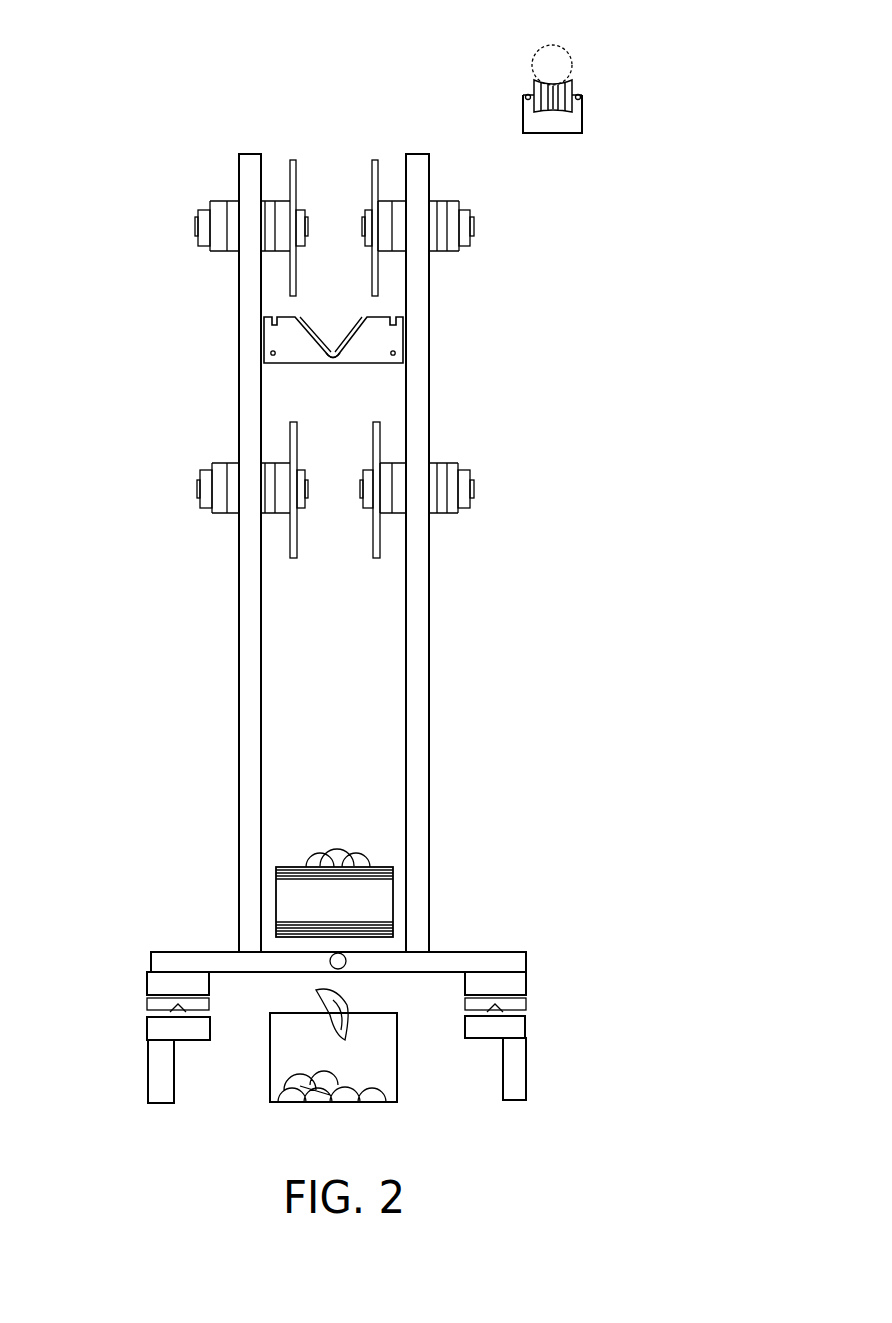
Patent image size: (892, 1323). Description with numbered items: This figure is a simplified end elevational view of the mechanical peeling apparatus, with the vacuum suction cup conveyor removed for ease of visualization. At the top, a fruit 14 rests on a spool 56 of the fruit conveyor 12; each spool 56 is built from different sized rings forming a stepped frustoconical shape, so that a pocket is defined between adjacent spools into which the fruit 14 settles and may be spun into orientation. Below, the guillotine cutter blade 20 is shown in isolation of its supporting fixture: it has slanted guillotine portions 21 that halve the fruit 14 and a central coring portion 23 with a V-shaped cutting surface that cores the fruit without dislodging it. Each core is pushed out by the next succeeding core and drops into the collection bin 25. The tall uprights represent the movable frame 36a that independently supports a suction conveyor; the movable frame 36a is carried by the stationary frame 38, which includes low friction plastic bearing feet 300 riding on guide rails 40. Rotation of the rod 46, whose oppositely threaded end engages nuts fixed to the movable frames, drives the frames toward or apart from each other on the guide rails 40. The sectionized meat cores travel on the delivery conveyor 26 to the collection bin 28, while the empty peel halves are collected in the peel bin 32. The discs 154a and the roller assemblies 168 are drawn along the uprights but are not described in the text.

The fruit conveyor 12 is at (490, 92).
The fruit 14 is at (533, 57).
The spool 56 is at (582, 87).
The discs 154a is at (372, 193).
The roller assemblies 168 is at (462, 238).
The slanted guillotine portions 21 is at (372, 322).
The guillotine cutter blade 20 is at (390, 335).
The coring portion 23 is at (337, 363).
The movable frame 36a is at (430, 710).
The delivery conveyor 26 is at (377, 866).
The collection bin 25 is at (402, 902).
The rod 46 is at (345, 966).
The guide rails 40 is at (178, 1012).
The stationary frame 38 is at (148, 1088).
The low friction plastic bearing feet 300 is at (527, 1003).
The collection bin 28 is at (300, 1083).
The peel bin 32 is at (400, 1087).